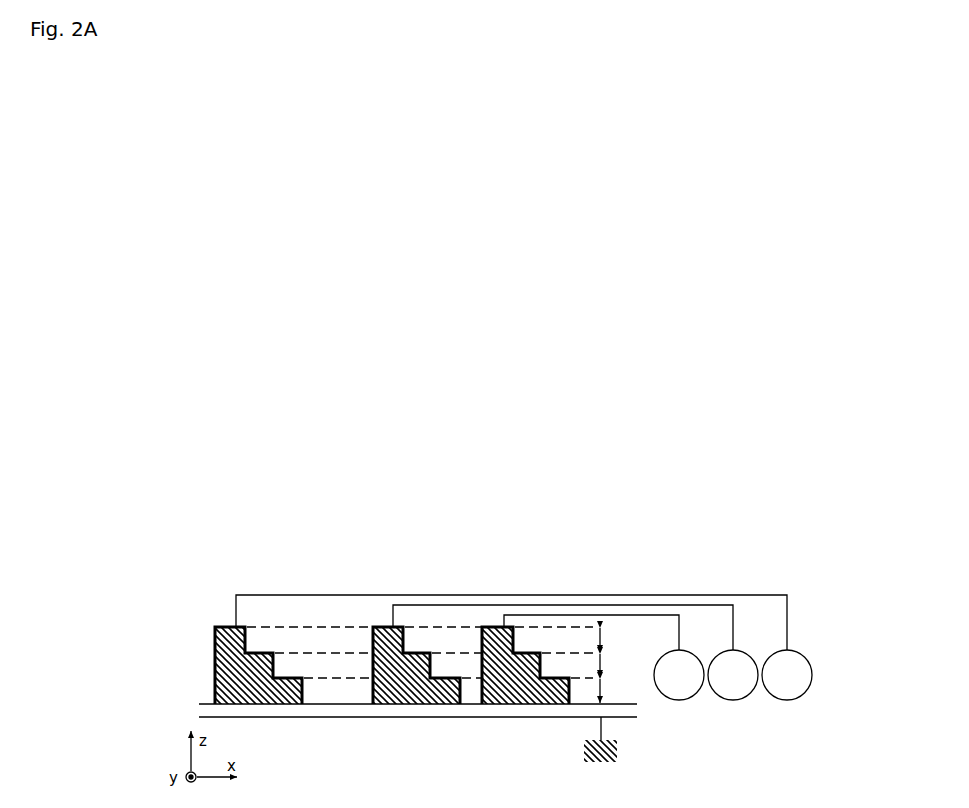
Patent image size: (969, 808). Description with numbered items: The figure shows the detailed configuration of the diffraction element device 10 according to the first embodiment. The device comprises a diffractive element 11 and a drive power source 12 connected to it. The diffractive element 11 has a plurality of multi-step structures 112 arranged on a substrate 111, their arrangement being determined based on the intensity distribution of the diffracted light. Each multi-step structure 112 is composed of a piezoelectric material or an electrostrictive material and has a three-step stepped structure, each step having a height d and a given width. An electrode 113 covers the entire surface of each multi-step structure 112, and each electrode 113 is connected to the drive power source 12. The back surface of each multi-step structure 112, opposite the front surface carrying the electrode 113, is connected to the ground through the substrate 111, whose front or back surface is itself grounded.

The diffraction element device 10 is at (567, 566).
The diffractive element 11 is at (408, 580).
The drive power source 12 is at (777, 698).
The substrate 111 is at (203, 713).
The multi-step structure 112 is at (215, 666).
The electrode 113 is at (231, 625).